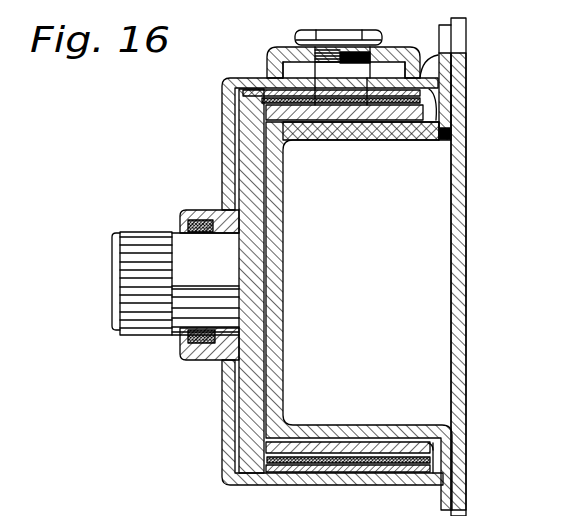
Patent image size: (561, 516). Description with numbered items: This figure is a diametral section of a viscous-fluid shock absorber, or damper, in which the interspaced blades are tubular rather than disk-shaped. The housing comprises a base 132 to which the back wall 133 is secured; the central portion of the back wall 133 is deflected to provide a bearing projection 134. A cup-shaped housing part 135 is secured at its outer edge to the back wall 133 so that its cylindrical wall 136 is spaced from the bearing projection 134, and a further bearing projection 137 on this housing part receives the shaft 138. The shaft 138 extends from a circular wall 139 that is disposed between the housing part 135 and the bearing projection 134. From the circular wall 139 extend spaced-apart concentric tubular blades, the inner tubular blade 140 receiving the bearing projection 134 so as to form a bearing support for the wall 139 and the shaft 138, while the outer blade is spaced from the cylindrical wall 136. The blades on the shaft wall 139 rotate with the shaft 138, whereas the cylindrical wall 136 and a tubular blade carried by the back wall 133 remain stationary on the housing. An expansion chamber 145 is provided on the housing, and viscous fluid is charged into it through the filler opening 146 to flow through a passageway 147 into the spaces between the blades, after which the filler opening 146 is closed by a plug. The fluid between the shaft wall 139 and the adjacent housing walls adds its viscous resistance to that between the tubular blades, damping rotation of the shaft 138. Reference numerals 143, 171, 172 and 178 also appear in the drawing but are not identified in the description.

The base 132 is at (456, 130).
The back wall 133 is at (438, 105).
The bearing projection 134 is at (405, 132).
The cup-shaped housing part 135 is at (240, 154).
The cylindrical wall 136 is at (270, 57).
The bearing projection 137 is at (210, 212).
The shaft 138 is at (134, 262).
The circular wall 139 is at (283, 233).
The inner tubular blade 140 is at (355, 112).
The mounting plate 143 is at (437, 195).
The expansion chamber 145 is at (418, 54).
The filler opening 146 is at (368, 58).
The passageway 147 is at (341, 100).
The outer casing 171 is at (250, 82).
The insulation layer 172 is at (461, 147).
The nut 178 is at (343, 38).